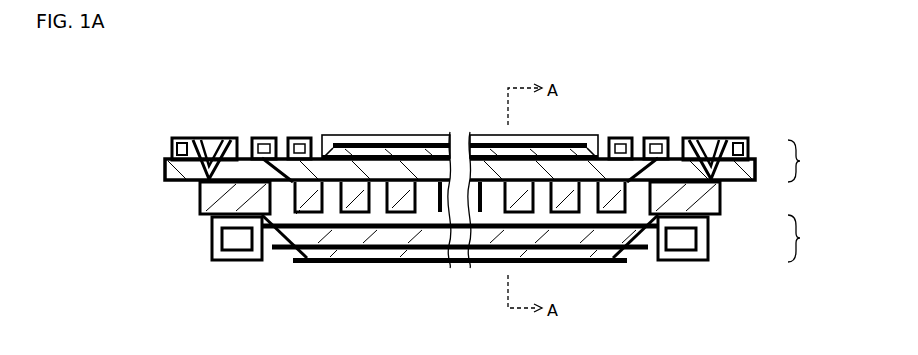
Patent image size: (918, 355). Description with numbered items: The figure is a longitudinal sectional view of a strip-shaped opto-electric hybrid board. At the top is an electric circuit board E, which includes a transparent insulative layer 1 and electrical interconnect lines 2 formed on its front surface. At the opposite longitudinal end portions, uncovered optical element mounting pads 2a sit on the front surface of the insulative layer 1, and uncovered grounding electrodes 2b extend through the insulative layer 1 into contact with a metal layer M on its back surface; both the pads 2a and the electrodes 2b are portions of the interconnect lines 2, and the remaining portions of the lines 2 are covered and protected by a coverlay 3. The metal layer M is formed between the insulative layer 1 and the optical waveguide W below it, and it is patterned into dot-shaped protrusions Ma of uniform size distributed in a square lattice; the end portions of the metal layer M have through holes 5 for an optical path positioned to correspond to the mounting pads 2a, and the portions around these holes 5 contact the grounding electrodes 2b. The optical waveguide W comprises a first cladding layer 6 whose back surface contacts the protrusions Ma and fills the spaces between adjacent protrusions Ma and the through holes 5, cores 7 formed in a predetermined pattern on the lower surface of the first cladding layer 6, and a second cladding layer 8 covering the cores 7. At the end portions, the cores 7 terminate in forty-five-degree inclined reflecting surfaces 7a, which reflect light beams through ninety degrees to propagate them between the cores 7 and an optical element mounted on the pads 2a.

The insulative layer 1 is at (347, 170).
The electrical interconnect lines 2 is at (398, 147).
The optical element mounting pads 2a is at (298, 141).
The grounding electrodes 2b is at (185, 142).
The coverlay 3 is at (428, 140).
The through holes for an optical path 5 is at (256, 233).
The first cladding layer 6 is at (337, 234).
The cores 7 is at (371, 250).
The reflecting surfaces 7a is at (272, 240).
The second cladding layer 8 is at (408, 258).
The dot-shaped protrusions Ma is at (483, 226).
The electric circuit board E is at (802, 161).
The metal layer M is at (700, 192).
The optical waveguide W is at (805, 238).